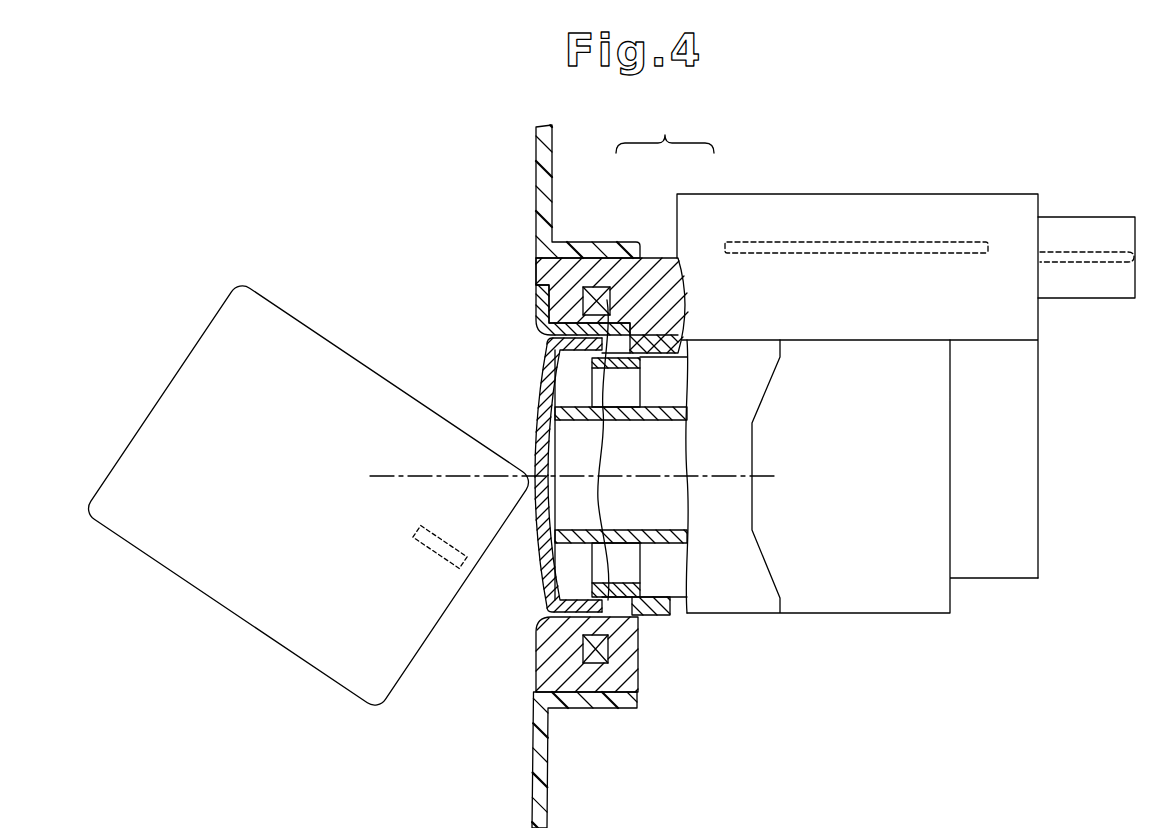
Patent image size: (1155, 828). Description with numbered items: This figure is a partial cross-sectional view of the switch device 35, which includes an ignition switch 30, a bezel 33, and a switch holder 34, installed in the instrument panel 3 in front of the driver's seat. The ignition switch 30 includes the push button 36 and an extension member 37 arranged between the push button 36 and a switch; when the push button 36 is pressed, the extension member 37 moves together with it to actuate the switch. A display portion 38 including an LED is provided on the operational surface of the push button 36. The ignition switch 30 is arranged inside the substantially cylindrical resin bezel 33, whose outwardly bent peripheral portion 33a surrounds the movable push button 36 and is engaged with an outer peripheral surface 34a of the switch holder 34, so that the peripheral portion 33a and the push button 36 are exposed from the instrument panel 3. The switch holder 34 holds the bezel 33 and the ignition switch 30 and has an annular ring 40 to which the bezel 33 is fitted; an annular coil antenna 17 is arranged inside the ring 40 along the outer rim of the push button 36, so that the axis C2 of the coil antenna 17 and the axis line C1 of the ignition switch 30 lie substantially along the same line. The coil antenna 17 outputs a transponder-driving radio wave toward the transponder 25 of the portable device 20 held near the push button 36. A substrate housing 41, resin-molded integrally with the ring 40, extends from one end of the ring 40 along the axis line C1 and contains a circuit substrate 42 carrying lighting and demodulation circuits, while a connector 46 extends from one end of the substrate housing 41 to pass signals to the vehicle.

The instrument panel 3 is at (536, 153).
The coil antenna 17 is at (639, 450).
The portable device 20 is at (351, 353).
The transponder 25 is at (420, 565).
The ignition switch 30 is at (1040, 514).
The bezel 33 is at (655, 617).
The peripheral portion 33a is at (537, 301).
The switch holder 34 is at (665, 126).
The outer peripheral surface 34a is at (537, 268).
The switch device 35 is at (958, 163).
The push button 36 is at (545, 583).
The extension member 37 is at (668, 530).
The display portion 38 is at (547, 380).
The ring 40 is at (650, 258).
The substrate housing 41 is at (689, 197).
The circuit substrate 42 is at (842, 255).
The connector 46 is at (1080, 252).
The axis line C1 is at (704, 470).
The axis C2 is at (706, 490).